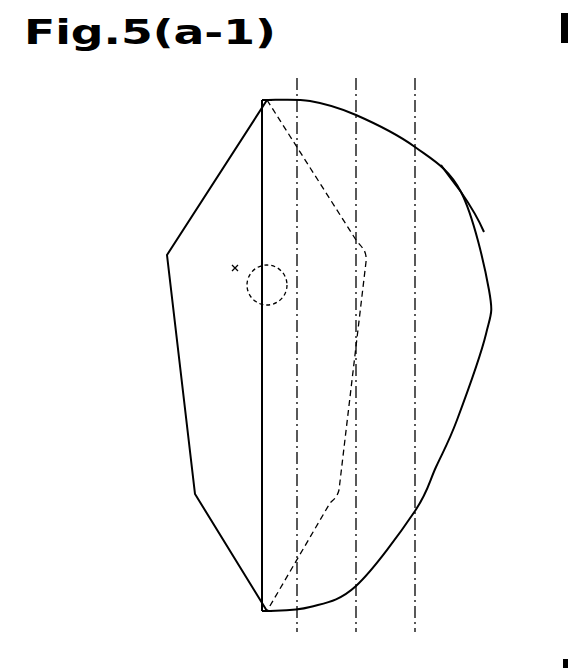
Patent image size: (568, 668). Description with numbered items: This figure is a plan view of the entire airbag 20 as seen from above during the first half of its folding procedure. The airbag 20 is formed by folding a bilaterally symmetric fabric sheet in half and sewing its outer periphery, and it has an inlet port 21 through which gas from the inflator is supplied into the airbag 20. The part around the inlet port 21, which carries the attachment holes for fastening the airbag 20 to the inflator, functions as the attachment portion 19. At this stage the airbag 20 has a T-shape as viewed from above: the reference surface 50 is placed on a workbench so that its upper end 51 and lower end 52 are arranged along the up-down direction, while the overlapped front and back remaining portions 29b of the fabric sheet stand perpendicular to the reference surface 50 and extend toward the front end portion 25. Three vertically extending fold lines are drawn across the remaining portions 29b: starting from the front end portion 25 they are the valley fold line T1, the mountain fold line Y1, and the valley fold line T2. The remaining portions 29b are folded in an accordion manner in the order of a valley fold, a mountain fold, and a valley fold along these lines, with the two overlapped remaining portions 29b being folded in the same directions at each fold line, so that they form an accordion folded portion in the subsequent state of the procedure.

The attachment portion 19 is at (235, 268).
The airbag 20 is at (450, 163).
The inlet port 21 is at (273, 264).
The front end portion 25 is at (479, 218).
The remaining portions 29b is at (471, 190).
The reference surface 50 is at (213, 396).
The upper end 51 is at (267, 100).
The lower end 52 is at (267, 612).
The valley fold line T1 is at (415, 80).
The valley fold line T2 is at (297, 80).
The mountain fold line Y1 is at (356, 80).